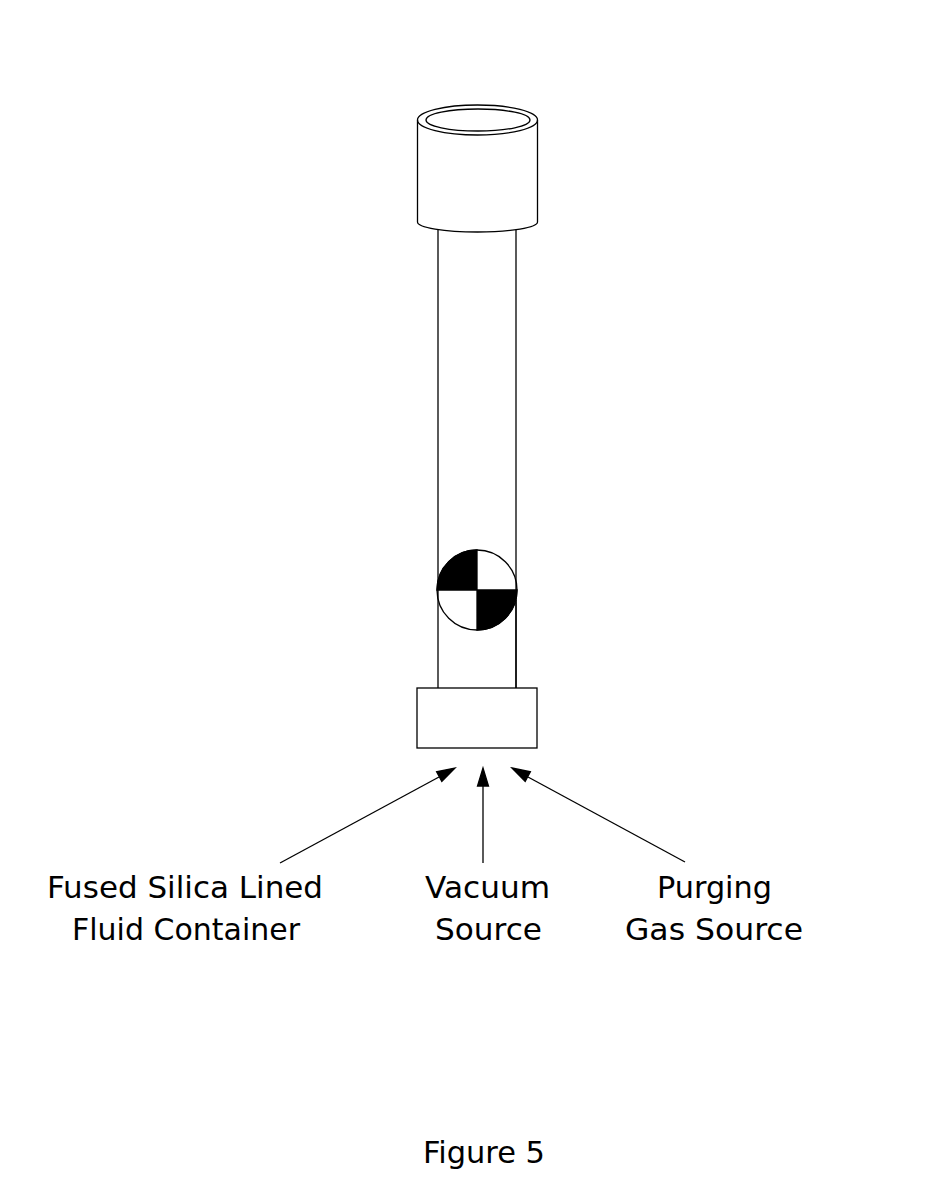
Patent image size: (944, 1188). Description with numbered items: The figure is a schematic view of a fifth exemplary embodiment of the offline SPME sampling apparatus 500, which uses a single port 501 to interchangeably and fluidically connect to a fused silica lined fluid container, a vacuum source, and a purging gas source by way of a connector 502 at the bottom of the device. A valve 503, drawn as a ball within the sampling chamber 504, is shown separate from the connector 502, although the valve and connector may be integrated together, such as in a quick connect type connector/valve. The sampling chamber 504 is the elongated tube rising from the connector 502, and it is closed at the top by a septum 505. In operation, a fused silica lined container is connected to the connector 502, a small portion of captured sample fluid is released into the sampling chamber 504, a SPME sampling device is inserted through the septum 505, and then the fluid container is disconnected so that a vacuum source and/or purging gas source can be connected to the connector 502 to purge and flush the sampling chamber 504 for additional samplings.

The offline SPME sampling apparatus 500 is at (528, 404).
The single port 501 is at (518, 638).
The connector 502 is at (417, 722).
The valve 503 is at (437, 590).
The sampling chamber 504 is at (446, 313).
The septum 505 is at (497, 103).